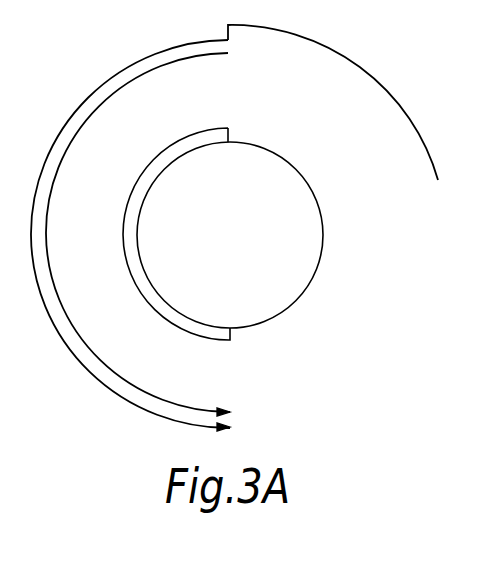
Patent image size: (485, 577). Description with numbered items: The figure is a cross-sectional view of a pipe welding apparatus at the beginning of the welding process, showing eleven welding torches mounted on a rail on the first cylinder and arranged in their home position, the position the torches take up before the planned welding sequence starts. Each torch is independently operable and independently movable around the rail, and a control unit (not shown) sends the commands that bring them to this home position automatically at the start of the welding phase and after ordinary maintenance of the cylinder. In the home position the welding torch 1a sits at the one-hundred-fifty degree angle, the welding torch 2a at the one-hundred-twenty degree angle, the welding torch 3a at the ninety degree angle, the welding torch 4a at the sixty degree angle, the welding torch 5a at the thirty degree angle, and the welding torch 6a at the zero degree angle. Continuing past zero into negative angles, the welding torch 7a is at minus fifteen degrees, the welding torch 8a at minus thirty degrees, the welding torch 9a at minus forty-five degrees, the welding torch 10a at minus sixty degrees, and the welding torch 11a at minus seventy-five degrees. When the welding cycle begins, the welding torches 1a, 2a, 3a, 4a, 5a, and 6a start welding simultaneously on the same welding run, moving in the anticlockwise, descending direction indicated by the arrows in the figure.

The welding torch 1a is at (156, 354).
The welding torch 2a is at (106, 304).
The welding torch 3a is at (88, 233).
The welding torch 4a is at (105, 164).
The welding torch 5a is at (154, 115).
The welding torch 6a is at (229, 98).
The welding torch 7a is at (270, 101).
The welding torch 8a is at (302, 115).
The welding torch 9a is at (331, 135).
The welding torch 10a is at (357, 163).
The welding torch 11a is at (370, 193).